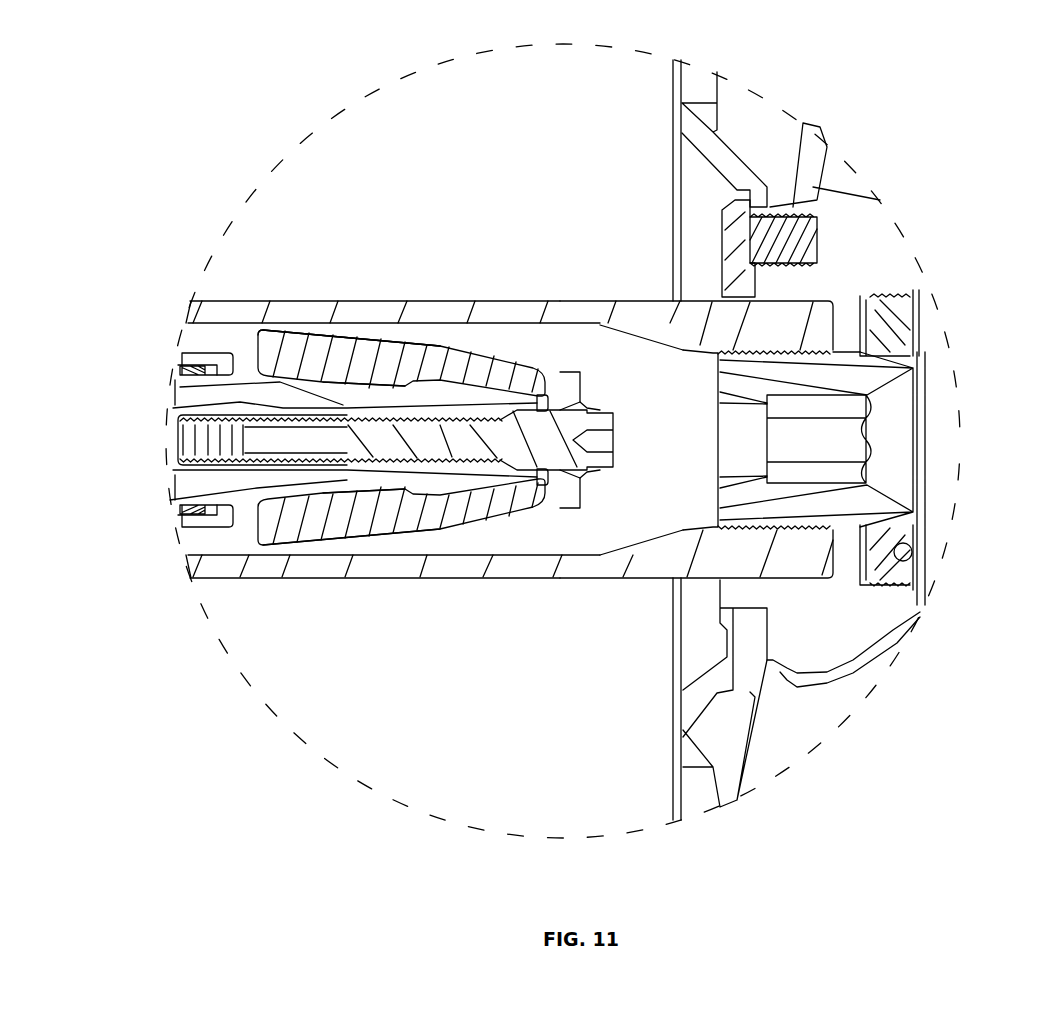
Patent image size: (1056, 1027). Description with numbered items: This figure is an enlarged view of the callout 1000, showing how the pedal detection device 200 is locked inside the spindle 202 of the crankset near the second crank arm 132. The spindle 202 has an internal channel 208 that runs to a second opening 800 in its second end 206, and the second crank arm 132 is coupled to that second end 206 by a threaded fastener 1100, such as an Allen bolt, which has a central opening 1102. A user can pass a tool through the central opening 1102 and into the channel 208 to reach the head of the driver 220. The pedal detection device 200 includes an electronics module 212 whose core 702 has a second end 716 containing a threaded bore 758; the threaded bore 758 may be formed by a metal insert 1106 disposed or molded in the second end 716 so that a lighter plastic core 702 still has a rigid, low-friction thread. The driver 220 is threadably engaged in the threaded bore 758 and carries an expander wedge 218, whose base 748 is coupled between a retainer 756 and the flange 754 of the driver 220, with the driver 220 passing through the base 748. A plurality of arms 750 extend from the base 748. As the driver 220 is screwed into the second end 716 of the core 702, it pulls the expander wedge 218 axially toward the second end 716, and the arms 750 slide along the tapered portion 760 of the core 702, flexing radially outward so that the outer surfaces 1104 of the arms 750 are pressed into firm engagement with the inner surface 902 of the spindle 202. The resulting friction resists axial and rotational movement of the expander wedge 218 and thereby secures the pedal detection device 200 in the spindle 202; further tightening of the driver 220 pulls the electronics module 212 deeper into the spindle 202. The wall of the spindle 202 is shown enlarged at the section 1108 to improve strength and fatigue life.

The callout 1000 is at (400, 78).
The second crank arm 132 is at (843, 185).
The pedal detection device 200 is at (142, 335).
The electronics module 212 is at (142, 387).
The spindle 202 is at (498, 320).
The second end 206 is at (838, 322).
The channel 208 is at (638, 340).
The expander wedge 218 is at (375, 350).
The driver 220 is at (427, 438).
The core 702 is at (205, 390).
The second end 716 is at (352, 466).
The base 748 is at (563, 400).
The arms 750 is at (395, 362).
The flange 754 is at (580, 402).
The retainer 756 is at (543, 407).
The threaded bore 758 is at (343, 458).
The tapered portion 760 is at (308, 405).
The second opening 800 is at (855, 346).
The inner surface 902 is at (597, 327).
The threaded fastener 1100 is at (883, 370).
The central opening 1102 is at (862, 439).
The outer surfaces 1104 is at (277, 328).
The metal insert 1106 is at (227, 460).
The section 1108 is at (335, 548).